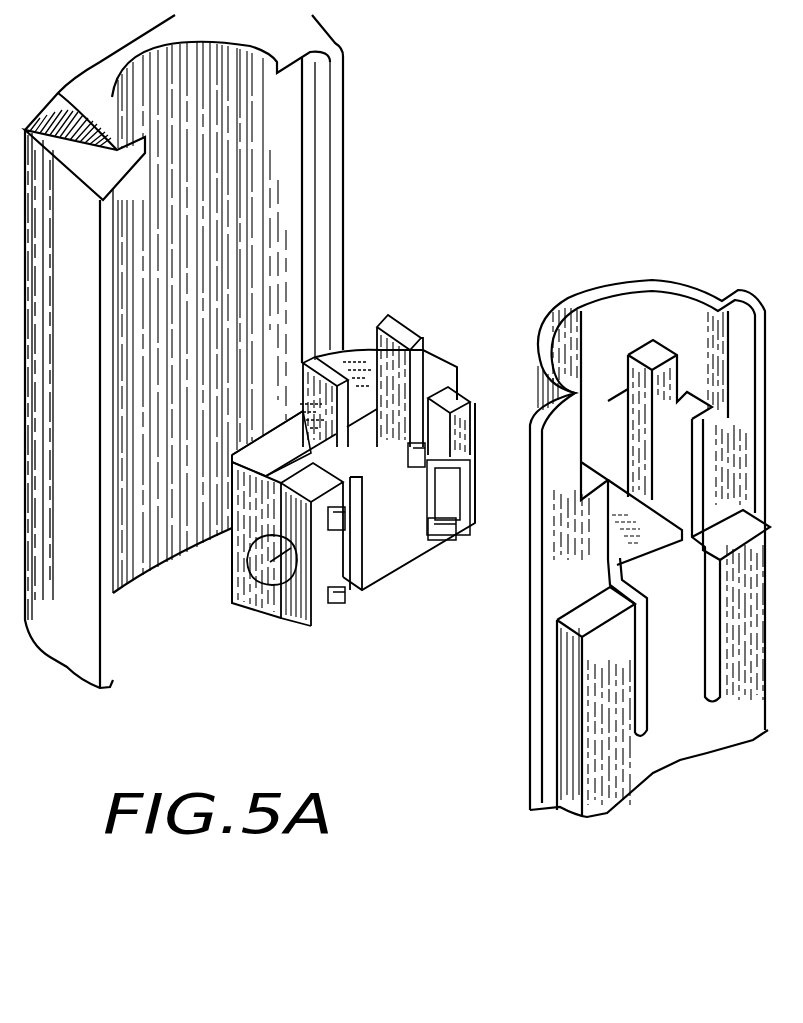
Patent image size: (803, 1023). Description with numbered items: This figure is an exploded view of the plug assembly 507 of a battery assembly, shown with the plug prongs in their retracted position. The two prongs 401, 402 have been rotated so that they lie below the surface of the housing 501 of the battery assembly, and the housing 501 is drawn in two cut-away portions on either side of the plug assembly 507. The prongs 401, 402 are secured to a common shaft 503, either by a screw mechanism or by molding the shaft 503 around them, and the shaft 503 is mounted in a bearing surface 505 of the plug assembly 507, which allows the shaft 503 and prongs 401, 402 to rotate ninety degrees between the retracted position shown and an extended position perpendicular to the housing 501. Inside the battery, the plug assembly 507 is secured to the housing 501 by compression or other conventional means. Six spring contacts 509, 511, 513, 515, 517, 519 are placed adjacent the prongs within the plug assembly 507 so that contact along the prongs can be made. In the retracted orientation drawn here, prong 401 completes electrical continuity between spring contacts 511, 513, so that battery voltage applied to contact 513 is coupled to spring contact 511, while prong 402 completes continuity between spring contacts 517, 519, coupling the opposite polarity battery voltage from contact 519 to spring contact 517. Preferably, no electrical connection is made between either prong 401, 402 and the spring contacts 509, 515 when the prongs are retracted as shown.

The housing 501 is at (340, 142).
The plug assembly 507 is at (357, 355).
The prong 401 is at (422, 342).
The prong 402 is at (297, 416).
The spring contact 511 is at (452, 442).
The shaft 503 is at (288, 608).
The bearing surface 505 is at (242, 588).
The spring contact 509 is at (443, 530).
The spring contact 513 is at (415, 522).
The spring contact 515 is at (341, 598).
The spring contact 517 is at (368, 478).
The spring contact 519 is at (410, 465).